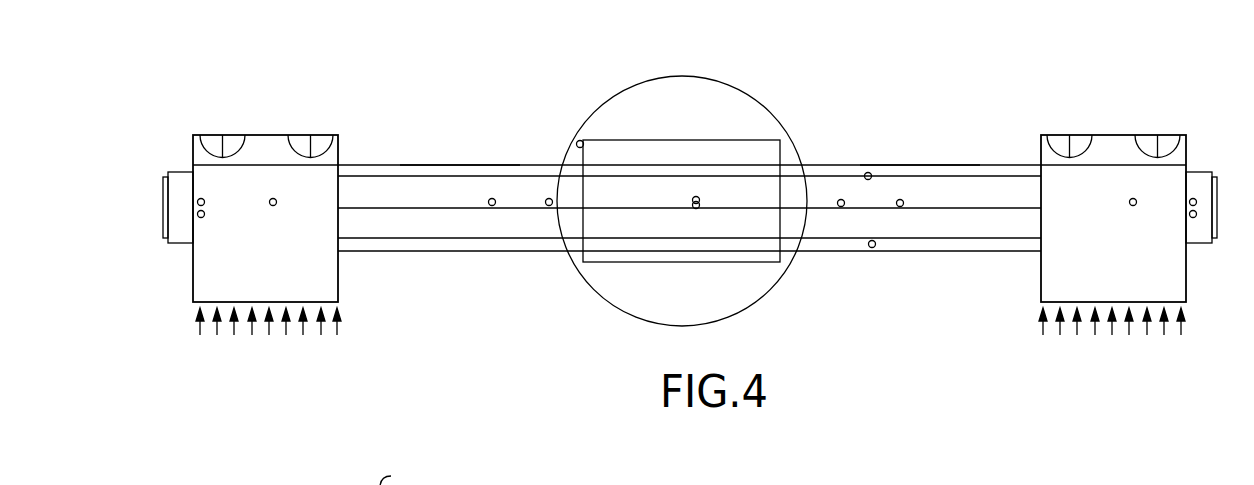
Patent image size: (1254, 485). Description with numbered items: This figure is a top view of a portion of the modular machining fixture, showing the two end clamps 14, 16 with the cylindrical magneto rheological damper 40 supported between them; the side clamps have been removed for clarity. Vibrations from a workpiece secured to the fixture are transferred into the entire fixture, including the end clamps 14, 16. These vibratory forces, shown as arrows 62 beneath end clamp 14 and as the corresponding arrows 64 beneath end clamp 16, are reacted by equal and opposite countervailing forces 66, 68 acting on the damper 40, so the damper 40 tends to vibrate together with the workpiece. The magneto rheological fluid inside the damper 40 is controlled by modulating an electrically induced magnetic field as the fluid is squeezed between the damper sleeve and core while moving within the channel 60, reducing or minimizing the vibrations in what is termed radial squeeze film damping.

The end clamp 14 is at (252, 256).
The end clamp 16 is at (1098, 256).
The cylindrical magneto rheological damper 40 is at (960, 220).
The channel 60 is at (400, 475).
The vibratory forces 62 is at (259, 360).
The second load force 64 is at (1105, 369).
The countervailing force 66 is at (917, 165).
The countervailing force 68 is at (457, 165).